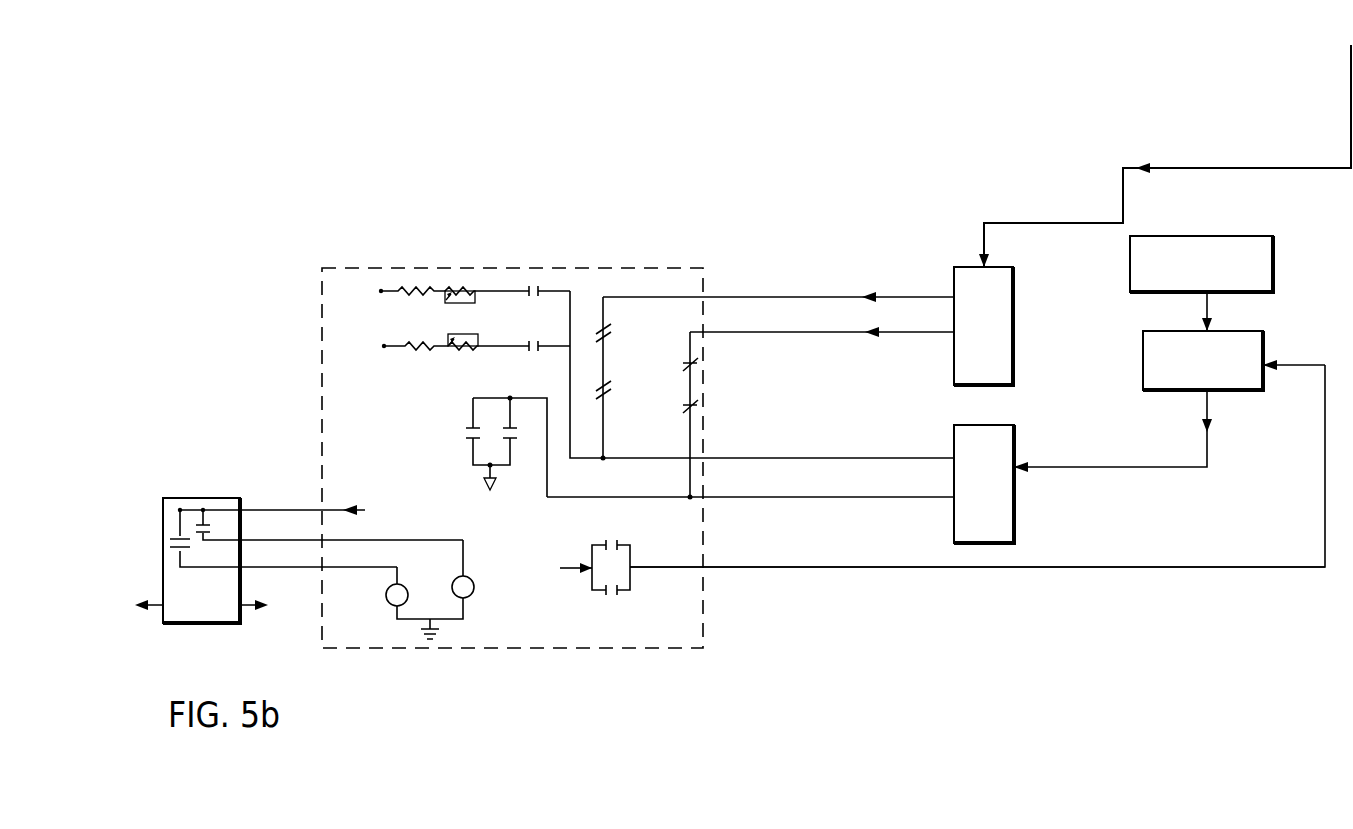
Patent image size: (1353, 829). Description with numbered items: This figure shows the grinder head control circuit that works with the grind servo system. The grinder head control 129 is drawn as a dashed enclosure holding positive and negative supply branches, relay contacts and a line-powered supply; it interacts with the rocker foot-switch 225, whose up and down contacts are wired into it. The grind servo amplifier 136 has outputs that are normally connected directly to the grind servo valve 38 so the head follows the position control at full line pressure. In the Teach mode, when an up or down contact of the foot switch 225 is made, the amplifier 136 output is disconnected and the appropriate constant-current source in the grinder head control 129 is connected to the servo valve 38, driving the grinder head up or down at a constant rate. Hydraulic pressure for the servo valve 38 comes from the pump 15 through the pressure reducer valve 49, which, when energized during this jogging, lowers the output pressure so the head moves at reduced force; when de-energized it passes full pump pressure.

The grinder head control 129 is at (596, 268).
The grind servo amplifier 136 is at (1008, 296).
The hydraulic pump 15 is at (1232, 236).
The hydraulic pressure reducer valve 49 is at (1250, 331).
The grind servo valve 38 is at (1010, 441).
The foot-switch control 225 is at (198, 498).